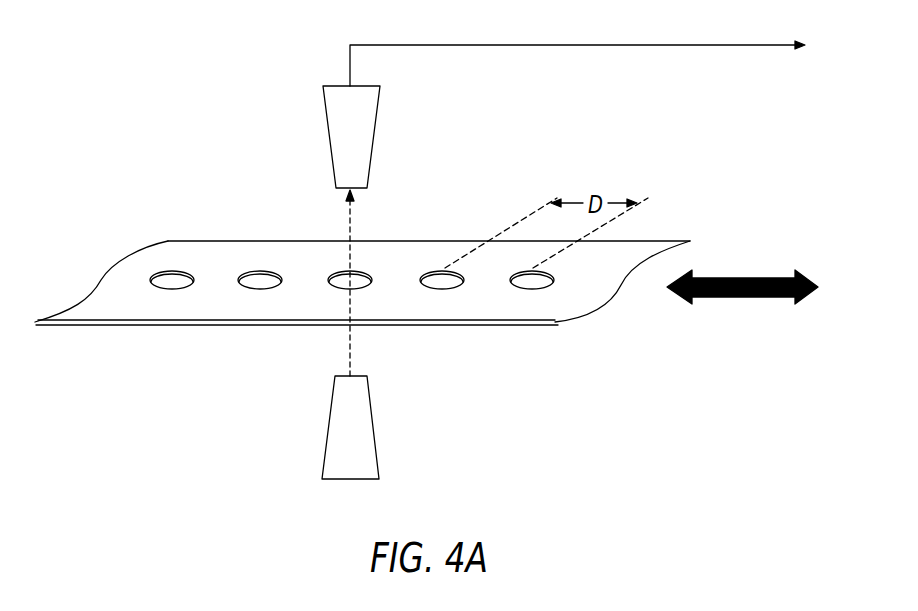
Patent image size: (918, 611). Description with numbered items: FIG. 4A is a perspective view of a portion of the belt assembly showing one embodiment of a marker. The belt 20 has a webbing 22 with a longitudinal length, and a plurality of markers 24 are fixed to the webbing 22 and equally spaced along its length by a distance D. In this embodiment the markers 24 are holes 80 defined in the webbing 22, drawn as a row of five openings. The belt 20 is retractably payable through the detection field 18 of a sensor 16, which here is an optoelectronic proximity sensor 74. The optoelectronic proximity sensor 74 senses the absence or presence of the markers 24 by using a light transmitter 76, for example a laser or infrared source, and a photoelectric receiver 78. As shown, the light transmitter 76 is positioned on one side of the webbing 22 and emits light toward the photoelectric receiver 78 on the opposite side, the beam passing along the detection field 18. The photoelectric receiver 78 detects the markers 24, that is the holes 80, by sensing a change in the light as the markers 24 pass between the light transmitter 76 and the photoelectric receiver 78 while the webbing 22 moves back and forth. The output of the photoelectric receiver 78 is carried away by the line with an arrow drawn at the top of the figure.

The photoelectric receiver 78 is at (333, 84).
The detection field 18 is at (343, 219).
The belt 20 is at (362, 323).
The webbing 22 is at (465, 326).
The markers 24 is at (305, 231).
The holes 80 is at (170, 270).
The light transmitter 76 is at (378, 454).
The sensor 16 is at (232, 443).
The optoelectronic proximity sensor 74 is at (268, 401).